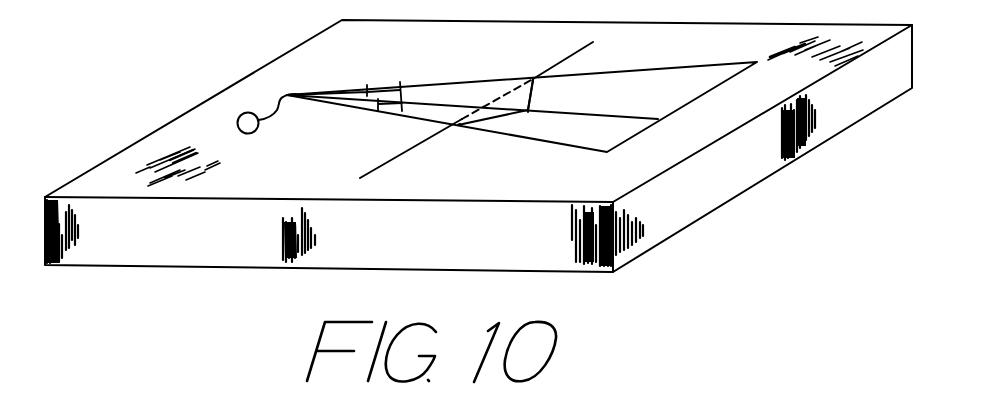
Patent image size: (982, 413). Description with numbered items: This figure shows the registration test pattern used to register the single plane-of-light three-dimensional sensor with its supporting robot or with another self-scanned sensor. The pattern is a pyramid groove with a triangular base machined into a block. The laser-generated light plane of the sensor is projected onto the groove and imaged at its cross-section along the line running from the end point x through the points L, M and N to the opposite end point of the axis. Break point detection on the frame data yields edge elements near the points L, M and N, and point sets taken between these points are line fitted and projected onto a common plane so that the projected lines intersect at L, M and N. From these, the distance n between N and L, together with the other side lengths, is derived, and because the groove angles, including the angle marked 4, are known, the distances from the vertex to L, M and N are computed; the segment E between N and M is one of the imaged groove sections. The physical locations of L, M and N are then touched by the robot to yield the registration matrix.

The marker tick on lower beam 4 is at (374, 107).
The end point of cross-section line x is at (354, 163).
The distance NL n is at (498, 97).
The point L is at (531, 82).
The point M is at (531, 123).
The point N is at (457, 138).
The segment N-M E is at (503, 114).